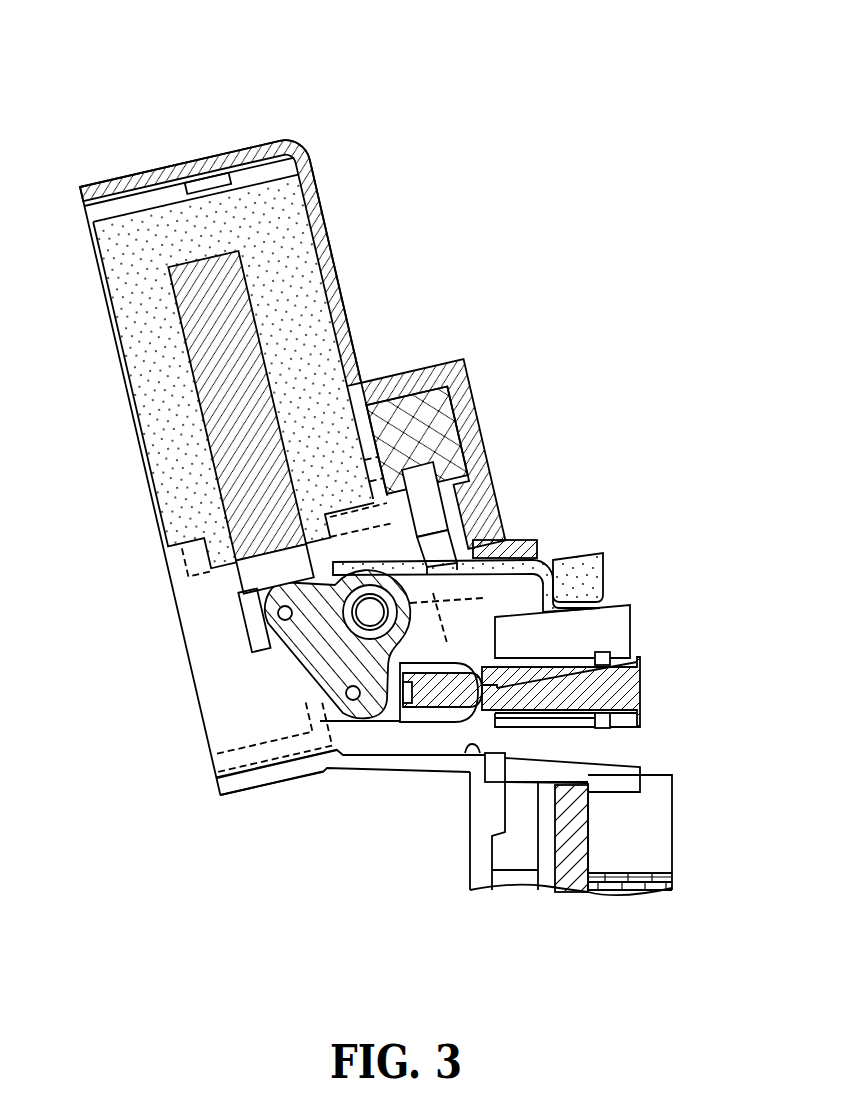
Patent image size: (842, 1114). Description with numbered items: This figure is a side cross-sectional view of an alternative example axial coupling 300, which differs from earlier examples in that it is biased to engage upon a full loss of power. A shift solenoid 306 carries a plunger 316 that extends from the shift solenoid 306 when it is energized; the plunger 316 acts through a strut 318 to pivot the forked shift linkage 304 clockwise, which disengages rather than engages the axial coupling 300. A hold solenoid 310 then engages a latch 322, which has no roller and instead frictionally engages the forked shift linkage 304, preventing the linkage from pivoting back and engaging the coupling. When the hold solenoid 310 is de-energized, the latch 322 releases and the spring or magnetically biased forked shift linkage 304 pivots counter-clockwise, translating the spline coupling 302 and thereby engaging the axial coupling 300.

The axial coupling 300 is at (613, 91).
The spline coupling 302 is at (657, 828).
The forked shift linkage 304 is at (610, 623).
The shift solenoid 306 is at (283, 226).
The hold solenoid 310 is at (423, 413).
The plunger 316 is at (243, 425).
The strut 318 is at (627, 688).
The latch 322 is at (584, 560).